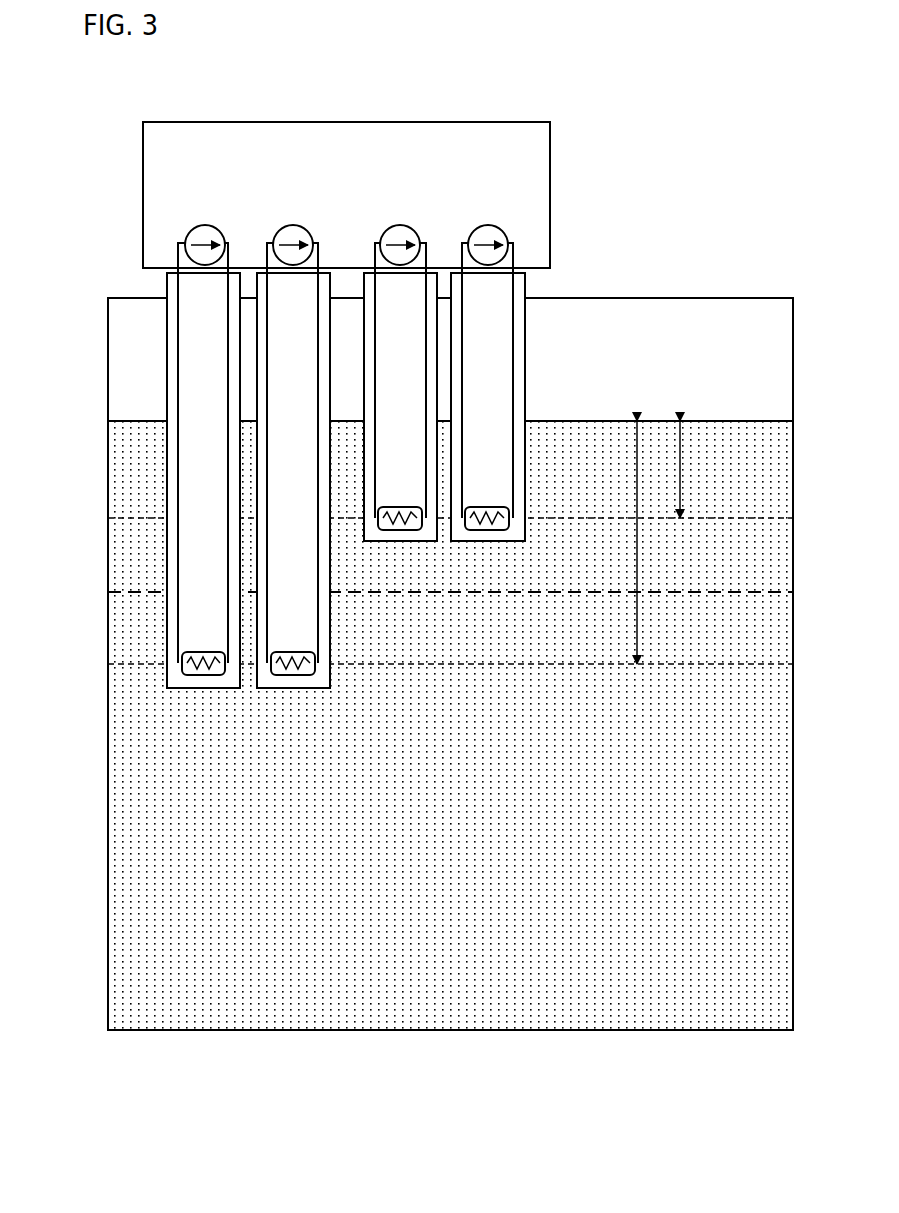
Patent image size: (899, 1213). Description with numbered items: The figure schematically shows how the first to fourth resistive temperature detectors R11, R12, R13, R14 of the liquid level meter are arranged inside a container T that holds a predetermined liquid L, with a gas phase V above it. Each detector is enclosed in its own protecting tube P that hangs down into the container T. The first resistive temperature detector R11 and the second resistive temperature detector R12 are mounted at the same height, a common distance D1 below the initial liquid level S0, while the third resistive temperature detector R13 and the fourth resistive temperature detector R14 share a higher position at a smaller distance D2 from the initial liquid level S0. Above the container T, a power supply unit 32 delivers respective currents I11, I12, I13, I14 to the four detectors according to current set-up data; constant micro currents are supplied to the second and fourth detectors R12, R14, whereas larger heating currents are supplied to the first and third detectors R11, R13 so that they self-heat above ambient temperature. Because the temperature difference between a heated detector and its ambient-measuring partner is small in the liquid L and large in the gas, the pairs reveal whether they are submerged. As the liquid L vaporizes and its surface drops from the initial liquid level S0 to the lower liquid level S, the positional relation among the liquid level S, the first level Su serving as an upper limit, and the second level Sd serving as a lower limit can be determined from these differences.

The power supply unit 32 is at (550, 195).
The container T is at (722, 298).
The protecting tube P is at (167, 322).
The vapor phase V is at (128, 376).
The liquid L is at (128, 473).
The initial liquid level S0 is at (468, 421).
The first level Su is at (468, 519).
The liquid level S is at (462, 593).
The second level Sd is at (468, 665).
The distance D1 is at (651, 542).
The distance D2 is at (695, 469).
The current I11 is at (203, 432).
The current I12 is at (292, 432).
The current I13 is at (400, 359).
The current I14 is at (487, 359).
The first resistive temperature detector R11 is at (200, 653).
The second resistive temperature detector R12 is at (288, 653).
The third resistive temperature detector R13 is at (395, 508).
The fourth resistive temperature detector R14 is at (483, 508).